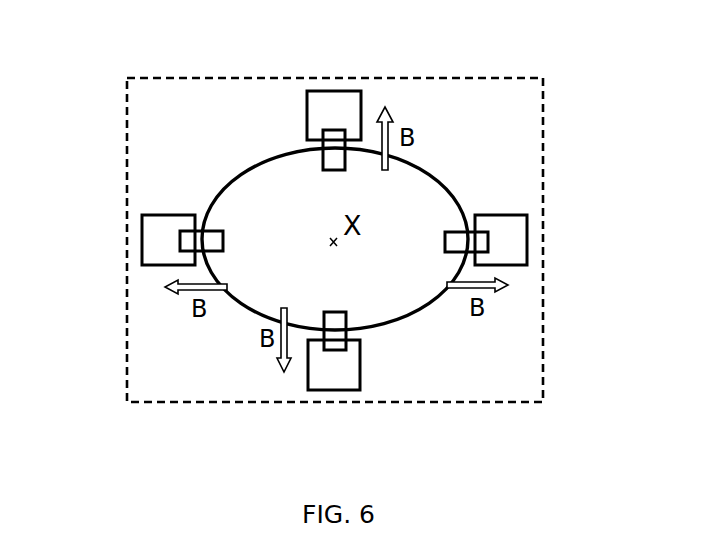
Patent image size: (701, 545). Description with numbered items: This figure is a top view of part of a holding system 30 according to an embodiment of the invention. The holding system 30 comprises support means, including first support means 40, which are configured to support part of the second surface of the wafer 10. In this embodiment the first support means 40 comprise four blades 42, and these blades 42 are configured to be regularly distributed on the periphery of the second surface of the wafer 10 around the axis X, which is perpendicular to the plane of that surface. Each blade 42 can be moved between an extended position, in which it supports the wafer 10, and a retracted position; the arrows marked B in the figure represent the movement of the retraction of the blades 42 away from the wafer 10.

The wafer 10 is at (170, 286).
The holding system 30 is at (522, 143).
The first support means 40 is at (340, 104).
The blade 42 is at (341, 156).